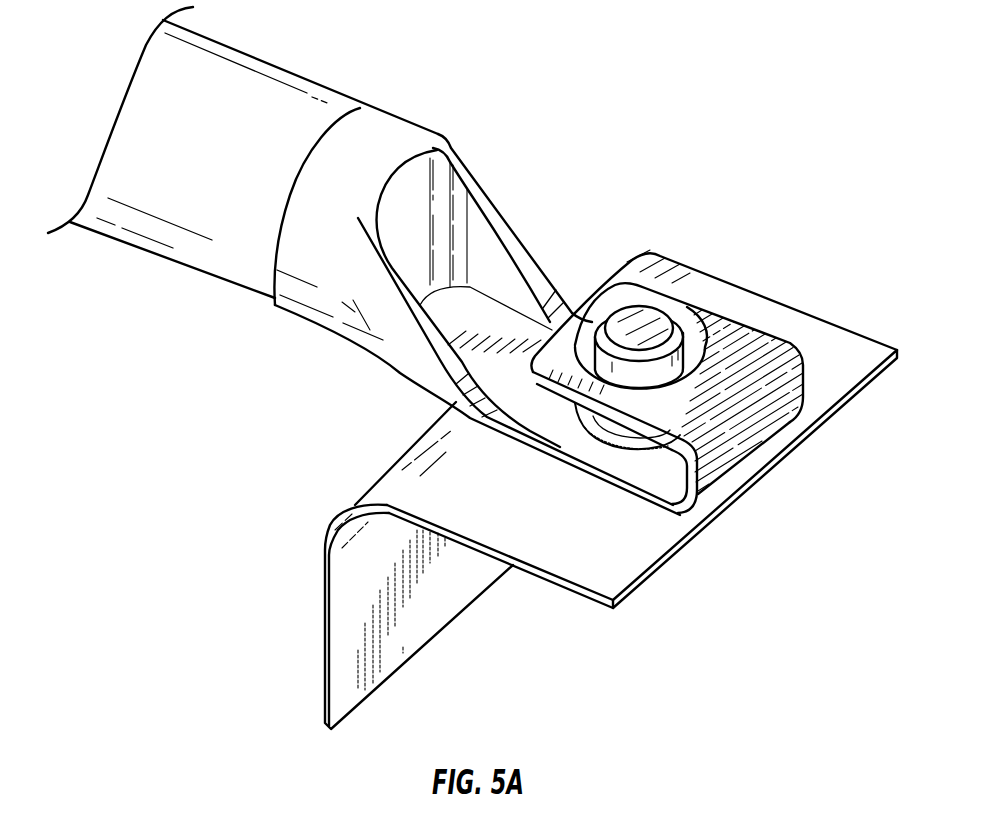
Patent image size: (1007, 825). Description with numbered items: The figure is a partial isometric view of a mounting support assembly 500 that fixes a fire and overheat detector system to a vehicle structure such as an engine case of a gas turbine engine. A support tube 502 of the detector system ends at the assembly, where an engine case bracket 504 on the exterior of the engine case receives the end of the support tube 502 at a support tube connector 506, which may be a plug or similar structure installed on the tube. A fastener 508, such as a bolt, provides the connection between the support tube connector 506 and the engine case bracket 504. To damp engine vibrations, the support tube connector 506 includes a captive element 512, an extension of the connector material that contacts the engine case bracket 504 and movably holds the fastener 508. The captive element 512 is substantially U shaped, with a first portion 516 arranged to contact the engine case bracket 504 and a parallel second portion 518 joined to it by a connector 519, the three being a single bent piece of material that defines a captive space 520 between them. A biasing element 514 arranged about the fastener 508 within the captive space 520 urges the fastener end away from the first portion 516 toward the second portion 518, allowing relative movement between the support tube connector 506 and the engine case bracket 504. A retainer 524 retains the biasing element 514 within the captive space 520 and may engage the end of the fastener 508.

The mounting support assembly 500 is at (722, 118).
The support tube 502 is at (312, 100).
The engine case bracket 504 is at (640, 564).
The support tube connector 506 is at (510, 230).
The fastener 508 is at (660, 318).
The captive element 512 is at (733, 337).
The biasing element 514 is at (595, 418).
The first portion 516 is at (643, 473).
The second portion 518 is at (557, 390).
The connector 519 is at (760, 433).
The captive space 520 is at (670, 473).
The retainer 524 is at (583, 347).